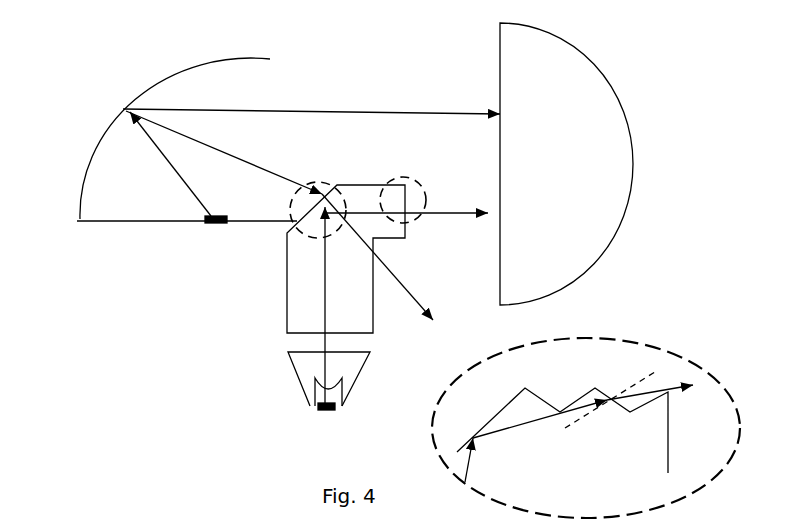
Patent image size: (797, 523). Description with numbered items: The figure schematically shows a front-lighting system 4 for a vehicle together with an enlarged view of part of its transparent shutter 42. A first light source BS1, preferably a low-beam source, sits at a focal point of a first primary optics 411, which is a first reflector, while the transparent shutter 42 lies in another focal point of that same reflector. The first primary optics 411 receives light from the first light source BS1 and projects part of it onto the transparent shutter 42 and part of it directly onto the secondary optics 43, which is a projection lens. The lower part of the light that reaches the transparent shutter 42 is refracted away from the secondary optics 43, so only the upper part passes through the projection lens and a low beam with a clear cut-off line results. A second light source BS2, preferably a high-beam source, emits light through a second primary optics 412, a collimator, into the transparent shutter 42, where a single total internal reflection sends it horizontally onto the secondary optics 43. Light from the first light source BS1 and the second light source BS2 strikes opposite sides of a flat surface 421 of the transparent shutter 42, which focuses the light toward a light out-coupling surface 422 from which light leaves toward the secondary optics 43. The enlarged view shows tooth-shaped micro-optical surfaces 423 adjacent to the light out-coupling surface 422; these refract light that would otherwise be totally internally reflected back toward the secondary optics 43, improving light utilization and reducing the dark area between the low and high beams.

The front-lighting system 4 is at (387, 270).
The first primary optics 411 is at (152, 138).
The second primary optics 412 is at (291, 379).
The transparent shutter 42 is at (482, 329).
The surface 421 is at (326, 189).
The light out-coupling surface 422 is at (492, 357).
The micro-optical surfaces 423 is at (575, 416).
The secondary optics 43 is at (537, 164).
The first light source BS1 is at (200, 239).
The second light source BS2 is at (366, 415).